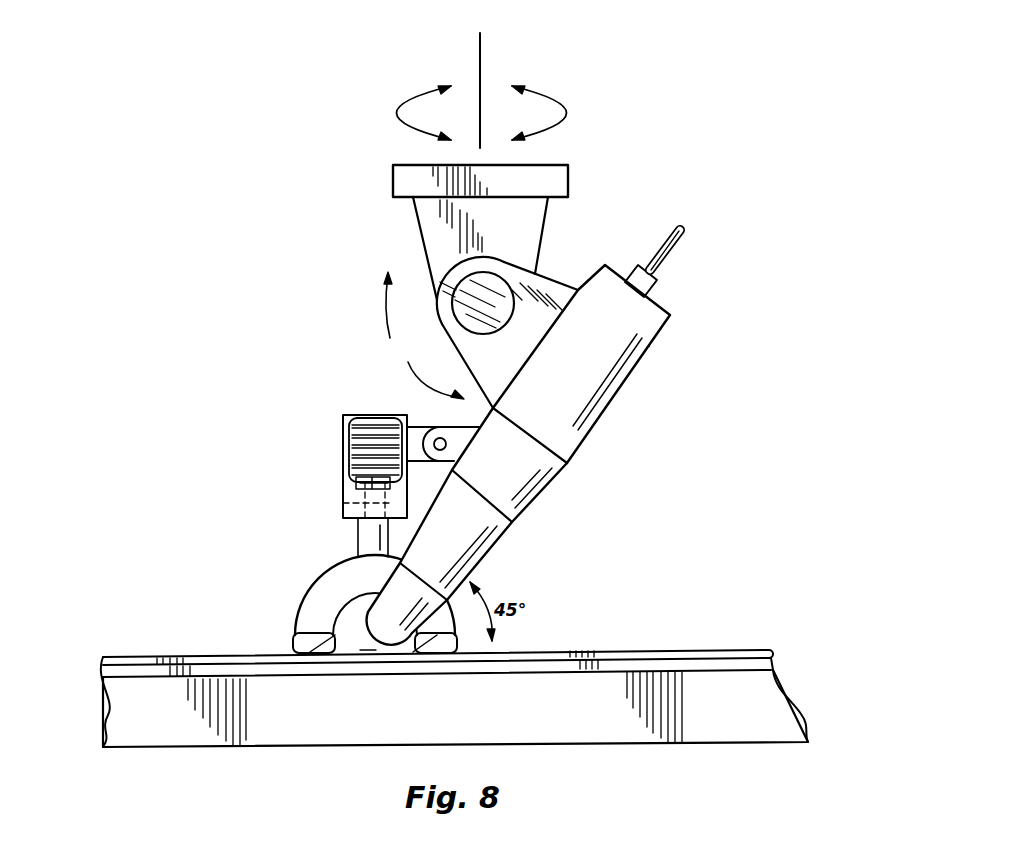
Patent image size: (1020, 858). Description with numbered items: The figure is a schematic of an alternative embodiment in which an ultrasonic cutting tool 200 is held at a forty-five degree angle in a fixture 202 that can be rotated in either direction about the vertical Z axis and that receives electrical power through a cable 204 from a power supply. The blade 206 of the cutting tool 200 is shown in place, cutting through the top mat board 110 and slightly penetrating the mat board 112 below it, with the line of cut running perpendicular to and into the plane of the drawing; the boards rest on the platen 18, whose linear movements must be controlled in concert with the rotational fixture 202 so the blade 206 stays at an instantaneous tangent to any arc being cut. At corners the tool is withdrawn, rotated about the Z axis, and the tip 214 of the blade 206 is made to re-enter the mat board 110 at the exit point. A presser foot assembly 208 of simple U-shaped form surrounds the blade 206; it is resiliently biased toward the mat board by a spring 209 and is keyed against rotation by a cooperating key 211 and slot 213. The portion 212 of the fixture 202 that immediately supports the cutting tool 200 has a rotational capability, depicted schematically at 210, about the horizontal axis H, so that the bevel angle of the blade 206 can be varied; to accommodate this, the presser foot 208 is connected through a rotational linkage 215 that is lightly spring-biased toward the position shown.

The platen 18 is at (718, 717).
The top mat board 110 is at (665, 655).
The mat board 112 is at (755, 663).
The ultrasonic cutting tool 200 is at (548, 507).
The fixture 202 is at (435, 228).
The cable 204 is at (672, 250).
The blade 206 is at (335, 633).
The presser foot assembly 208 is at (345, 577).
The spring 209 is at (343, 428).
The rotational capability 210 is at (422, 335).
The key 211 is at (343, 472).
The portion of fixture 212 is at (566, 284).
The slot 213 is at (343, 503).
The tip of blade 214 is at (364, 653).
The rotational linkage 215 is at (426, 424).
The horizontal axis H is at (484, 297).
The Z axis Z is at (482, 79).